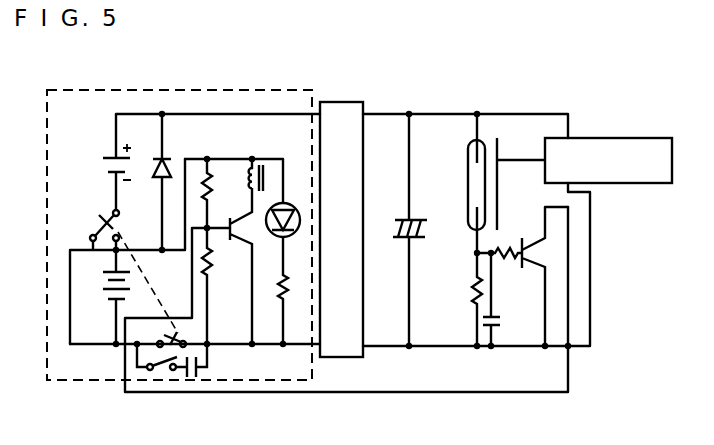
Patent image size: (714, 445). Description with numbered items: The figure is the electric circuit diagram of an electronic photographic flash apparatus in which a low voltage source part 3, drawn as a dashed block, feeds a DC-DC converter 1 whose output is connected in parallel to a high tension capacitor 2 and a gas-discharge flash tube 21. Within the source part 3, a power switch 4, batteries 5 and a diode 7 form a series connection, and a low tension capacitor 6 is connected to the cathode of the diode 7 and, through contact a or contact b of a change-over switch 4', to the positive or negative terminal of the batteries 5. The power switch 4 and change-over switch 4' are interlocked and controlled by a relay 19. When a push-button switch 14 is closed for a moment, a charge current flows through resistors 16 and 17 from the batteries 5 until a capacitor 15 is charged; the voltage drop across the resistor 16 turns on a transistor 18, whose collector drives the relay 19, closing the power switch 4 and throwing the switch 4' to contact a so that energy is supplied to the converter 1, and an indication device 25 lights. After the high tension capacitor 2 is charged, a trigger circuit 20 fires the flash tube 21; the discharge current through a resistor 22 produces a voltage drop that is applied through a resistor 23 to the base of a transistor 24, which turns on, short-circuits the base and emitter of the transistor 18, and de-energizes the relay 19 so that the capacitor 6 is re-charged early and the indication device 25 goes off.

The DC-DC converter part 1 is at (345, 102).
The high tension capacitor 2 is at (395, 225).
The low voltage source part 3 is at (254, 90).
The power switch 4 is at (163, 316).
The change-over switch 4' is at (125, 267).
The batteries 5 is at (103, 282).
The low tension capacitor 6 is at (103, 165).
The diode 7 is at (153, 166).
The switch 14 is at (162, 372).
The capacitor 15 is at (192, 380).
The resistor 16 is at (217, 280).
The resistor 17 is at (216, 186).
The transistor 18 is at (231, 240).
The relay 19 is at (264, 178).
The trigger circuit 20 is at (546, 165).
The gas-discharge flash tube 21 is at (469, 160).
The resistor 22 is at (471, 283).
The resistor 23 is at (505, 258).
The transistor 24 is at (537, 252).
The indication device 25 is at (279, 238).